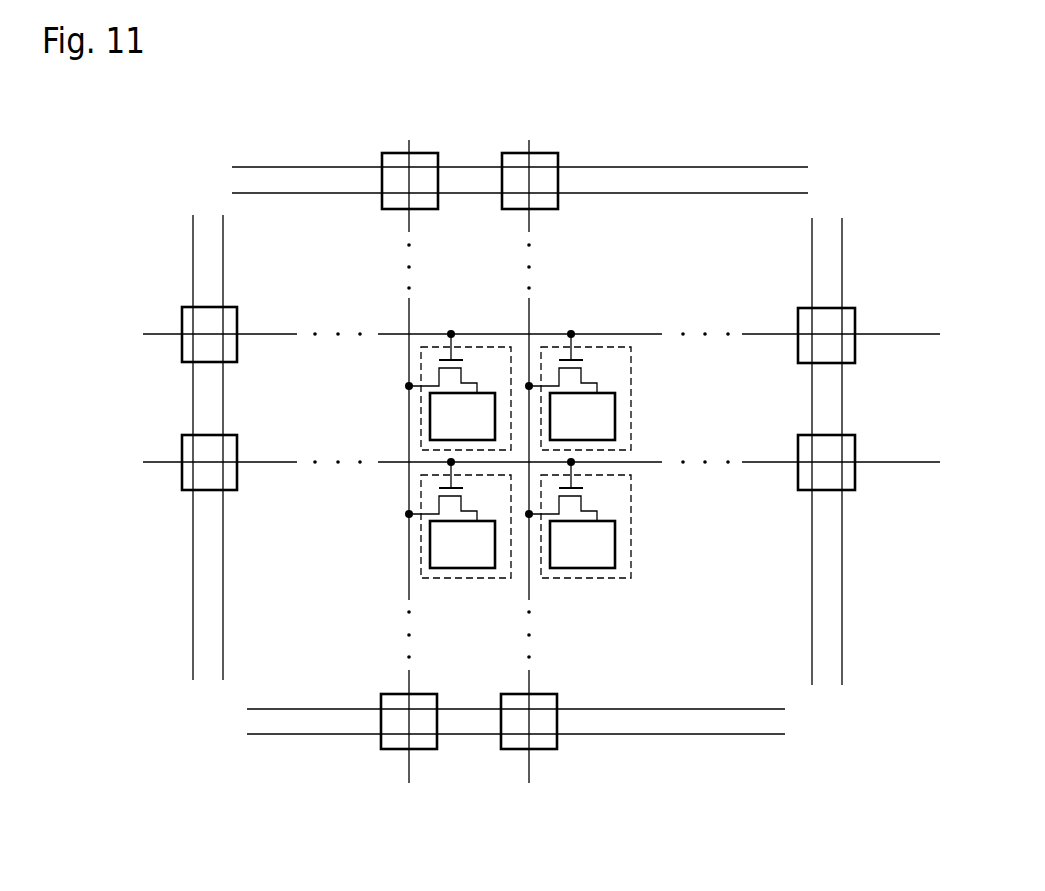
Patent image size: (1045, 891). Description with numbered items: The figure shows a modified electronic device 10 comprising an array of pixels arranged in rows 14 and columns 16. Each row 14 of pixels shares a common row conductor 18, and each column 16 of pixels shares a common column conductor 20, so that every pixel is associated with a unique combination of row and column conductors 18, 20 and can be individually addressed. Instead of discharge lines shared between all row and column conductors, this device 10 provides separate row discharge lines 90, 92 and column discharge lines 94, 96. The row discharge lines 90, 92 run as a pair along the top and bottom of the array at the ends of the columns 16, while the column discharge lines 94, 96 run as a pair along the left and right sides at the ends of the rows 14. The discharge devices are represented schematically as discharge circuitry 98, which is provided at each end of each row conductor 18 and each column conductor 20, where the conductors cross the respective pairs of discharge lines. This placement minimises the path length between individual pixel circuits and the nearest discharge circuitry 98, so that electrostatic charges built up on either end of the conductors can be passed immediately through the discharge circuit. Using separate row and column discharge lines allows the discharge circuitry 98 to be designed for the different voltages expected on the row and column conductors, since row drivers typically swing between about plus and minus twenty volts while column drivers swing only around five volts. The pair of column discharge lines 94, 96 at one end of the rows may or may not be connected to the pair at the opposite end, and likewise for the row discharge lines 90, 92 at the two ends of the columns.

The electronic device 10 is at (842, 164).
The row 14 is at (170, 395).
The column 16 is at (468, 800).
The row conductor 18 is at (158, 332).
The column conductor 20 is at (408, 770).
The row discharge line 90 is at (682, 195).
The row discharge line 92 is at (753, 168).
The column discharge line 94 is at (223, 643).
The column discharge line 96 is at (193, 595).
The discharge circuitry 98 is at (383, 210).